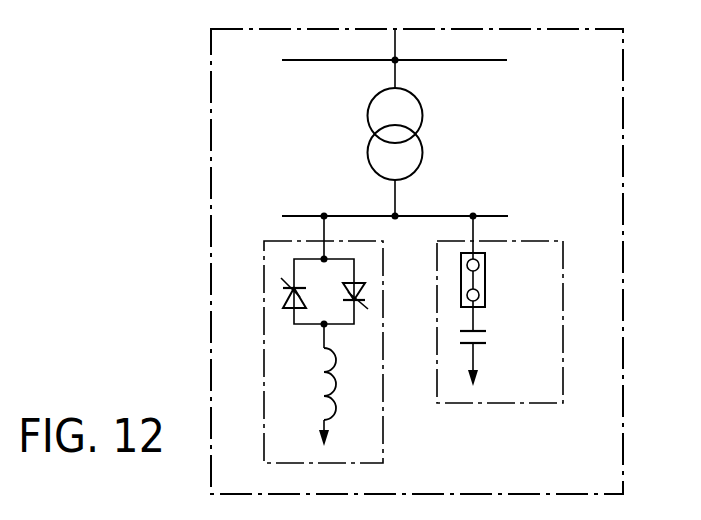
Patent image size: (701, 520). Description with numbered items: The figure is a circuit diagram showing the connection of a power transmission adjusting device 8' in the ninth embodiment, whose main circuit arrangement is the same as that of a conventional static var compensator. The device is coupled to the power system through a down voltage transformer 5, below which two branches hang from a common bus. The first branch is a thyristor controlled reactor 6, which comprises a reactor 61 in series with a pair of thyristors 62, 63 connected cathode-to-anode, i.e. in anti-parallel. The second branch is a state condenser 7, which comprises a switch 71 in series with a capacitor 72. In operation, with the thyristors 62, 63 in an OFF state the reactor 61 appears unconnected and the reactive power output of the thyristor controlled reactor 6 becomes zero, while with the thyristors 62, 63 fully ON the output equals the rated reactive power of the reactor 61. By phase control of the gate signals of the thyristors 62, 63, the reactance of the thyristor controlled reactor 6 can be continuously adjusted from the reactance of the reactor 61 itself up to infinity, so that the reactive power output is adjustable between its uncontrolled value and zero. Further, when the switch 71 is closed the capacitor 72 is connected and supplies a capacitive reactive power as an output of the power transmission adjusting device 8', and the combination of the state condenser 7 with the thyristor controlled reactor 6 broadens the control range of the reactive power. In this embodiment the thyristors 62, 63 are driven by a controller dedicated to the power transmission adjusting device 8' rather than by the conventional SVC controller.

The down voltage transformer 5 is at (423, 115).
The thyristor controlled reactor (TCR) 6 is at (383, 444).
The state condenser 7 is at (563, 290).
The power transmission adjusting device 8' is at (443, 261).
The reactor 61 is at (325, 382).
The thyristor 62 is at (284, 292).
The thyristor 63 is at (365, 291).
The switch 71 is at (487, 275).
The capacitor 72 is at (488, 338).